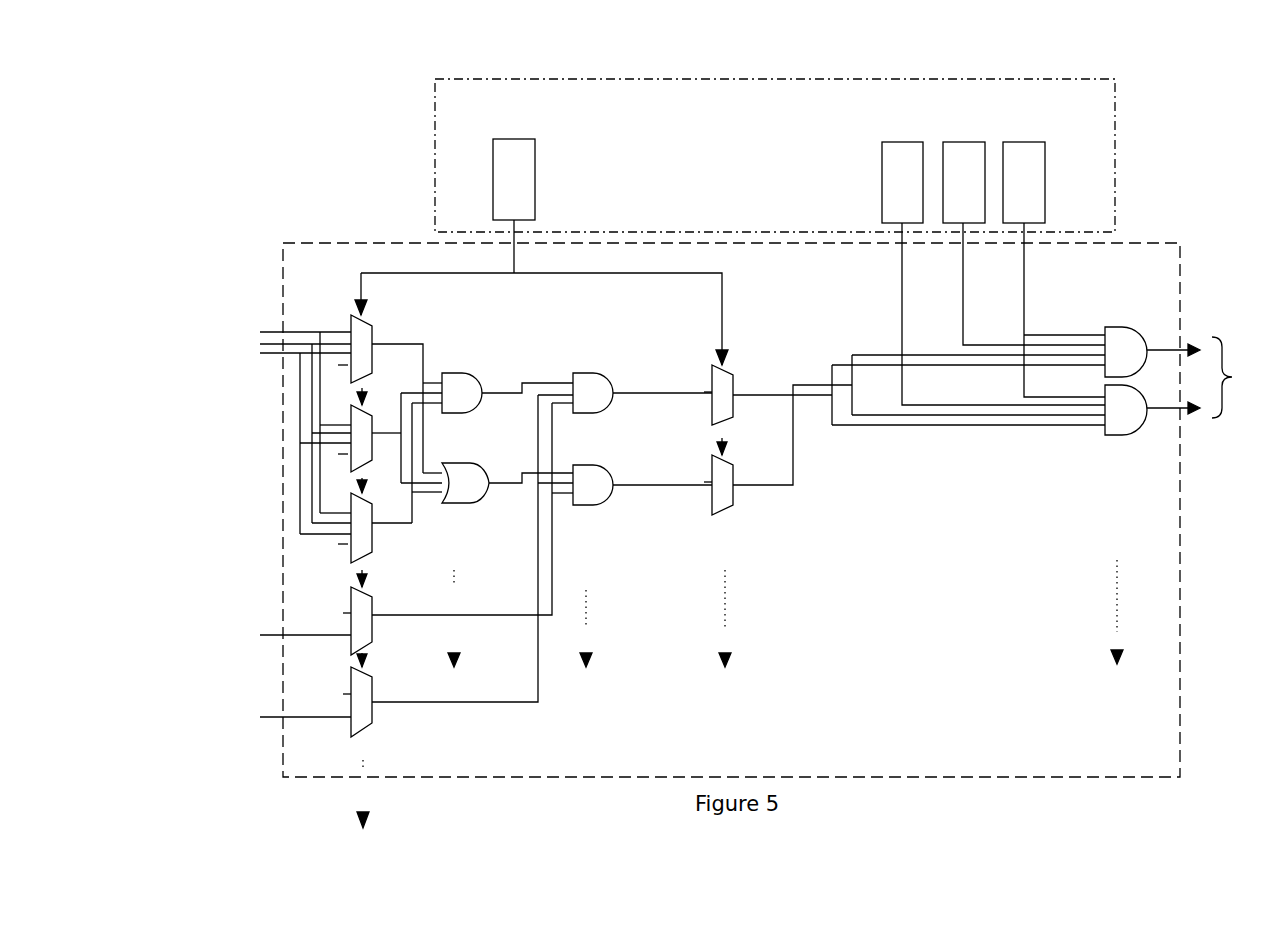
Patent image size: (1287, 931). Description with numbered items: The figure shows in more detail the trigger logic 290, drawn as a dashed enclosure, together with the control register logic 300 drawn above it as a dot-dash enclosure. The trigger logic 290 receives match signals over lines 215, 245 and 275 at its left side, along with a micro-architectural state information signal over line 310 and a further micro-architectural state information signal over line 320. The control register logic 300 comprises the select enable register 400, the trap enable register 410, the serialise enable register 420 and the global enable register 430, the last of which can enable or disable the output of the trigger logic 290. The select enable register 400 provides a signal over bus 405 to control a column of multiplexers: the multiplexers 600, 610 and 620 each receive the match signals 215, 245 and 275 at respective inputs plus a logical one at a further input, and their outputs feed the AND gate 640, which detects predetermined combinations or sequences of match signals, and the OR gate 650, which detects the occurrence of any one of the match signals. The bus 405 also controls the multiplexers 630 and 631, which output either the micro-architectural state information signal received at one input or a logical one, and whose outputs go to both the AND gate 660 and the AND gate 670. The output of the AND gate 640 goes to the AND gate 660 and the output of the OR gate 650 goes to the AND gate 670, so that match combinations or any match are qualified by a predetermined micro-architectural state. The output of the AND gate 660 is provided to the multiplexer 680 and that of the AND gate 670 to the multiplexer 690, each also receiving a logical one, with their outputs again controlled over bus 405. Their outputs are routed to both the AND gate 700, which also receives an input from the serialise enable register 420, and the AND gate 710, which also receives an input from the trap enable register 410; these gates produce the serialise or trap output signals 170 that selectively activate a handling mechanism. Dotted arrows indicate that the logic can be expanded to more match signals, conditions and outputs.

The output signal 170 is at (1229, 379).
The match signal line 215 is at (262, 330).
The match signal line 245 is at (262, 343).
The match signal line 275 is at (262, 355).
The trigger logic 290 is at (1180, 648).
The control register logic 300 is at (823, 78).
The micro-architectural state information signal line 310 is at (272, 634).
The micro-architectural state information signal line 320 is at (272, 716).
The select enable register 400 is at (512, 139).
The select bus 405 is at (361, 273).
The trap enable register 410 is at (905, 142).
The serialise enable register 420 is at (965, 142).
The global enable register 430 is at (1025, 142).
The multiplexer 600 is at (372, 330).
The multiplexer 610 is at (372, 460).
The multiplexer 620 is at (372, 552).
The multiplexer 630 is at (372, 642).
The multiplexer 631 is at (372, 723).
The AND gate 640 is at (455, 373).
The OR gate 650 is at (462, 463).
The AND gate 660 is at (585, 373).
The AND gate 670 is at (585, 465).
The multiplexer 680 is at (730, 370).
The multiplexer 690 is at (730, 460).
The AND gate 700 is at (1117, 327).
The AND gate 710 is at (1125, 435).